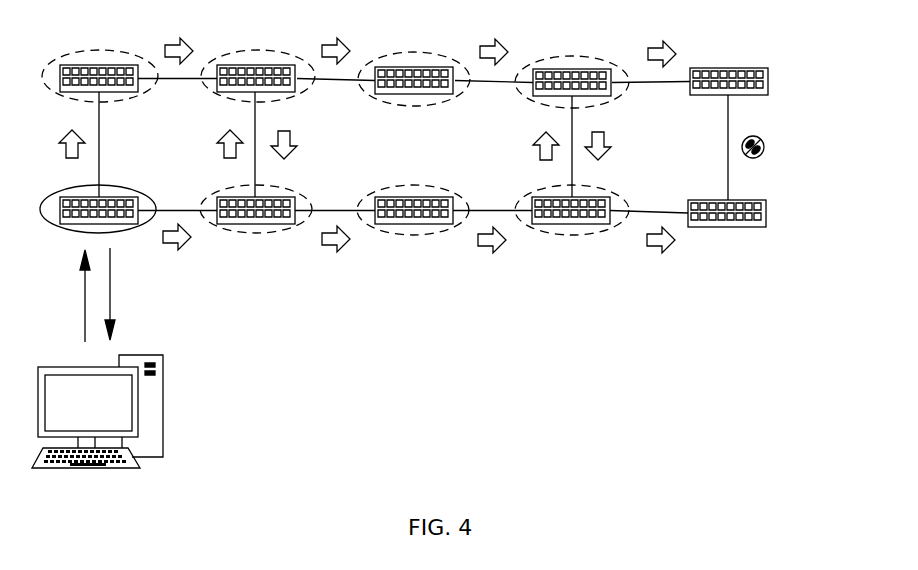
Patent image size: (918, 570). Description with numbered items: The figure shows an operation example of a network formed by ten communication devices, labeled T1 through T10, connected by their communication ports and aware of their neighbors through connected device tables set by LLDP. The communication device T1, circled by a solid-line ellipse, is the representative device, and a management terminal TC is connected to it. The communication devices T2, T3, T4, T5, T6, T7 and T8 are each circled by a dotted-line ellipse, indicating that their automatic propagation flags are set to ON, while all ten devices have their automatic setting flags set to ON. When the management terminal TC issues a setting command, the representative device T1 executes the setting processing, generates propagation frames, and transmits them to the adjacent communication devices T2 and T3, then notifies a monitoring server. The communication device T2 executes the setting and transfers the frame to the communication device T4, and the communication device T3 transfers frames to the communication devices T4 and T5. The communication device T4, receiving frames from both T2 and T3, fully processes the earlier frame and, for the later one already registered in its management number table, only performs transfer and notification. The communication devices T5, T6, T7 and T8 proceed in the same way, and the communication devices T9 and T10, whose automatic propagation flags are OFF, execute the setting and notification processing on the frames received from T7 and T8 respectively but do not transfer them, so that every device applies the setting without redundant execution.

The representative device T1 is at (70, 224).
The communication device T2 is at (118, 65).
The communication device T3 is at (271, 224).
The communication device T4 is at (275, 65).
The communication device T5 is at (425, 224).
The communication device T6 is at (433, 67).
The communication device T7 is at (583, 224).
The communication device T8 is at (589, 69).
The communication device T9 is at (743, 228).
The communication device T10 is at (741, 68).
The management terminal TC is at (163, 392).